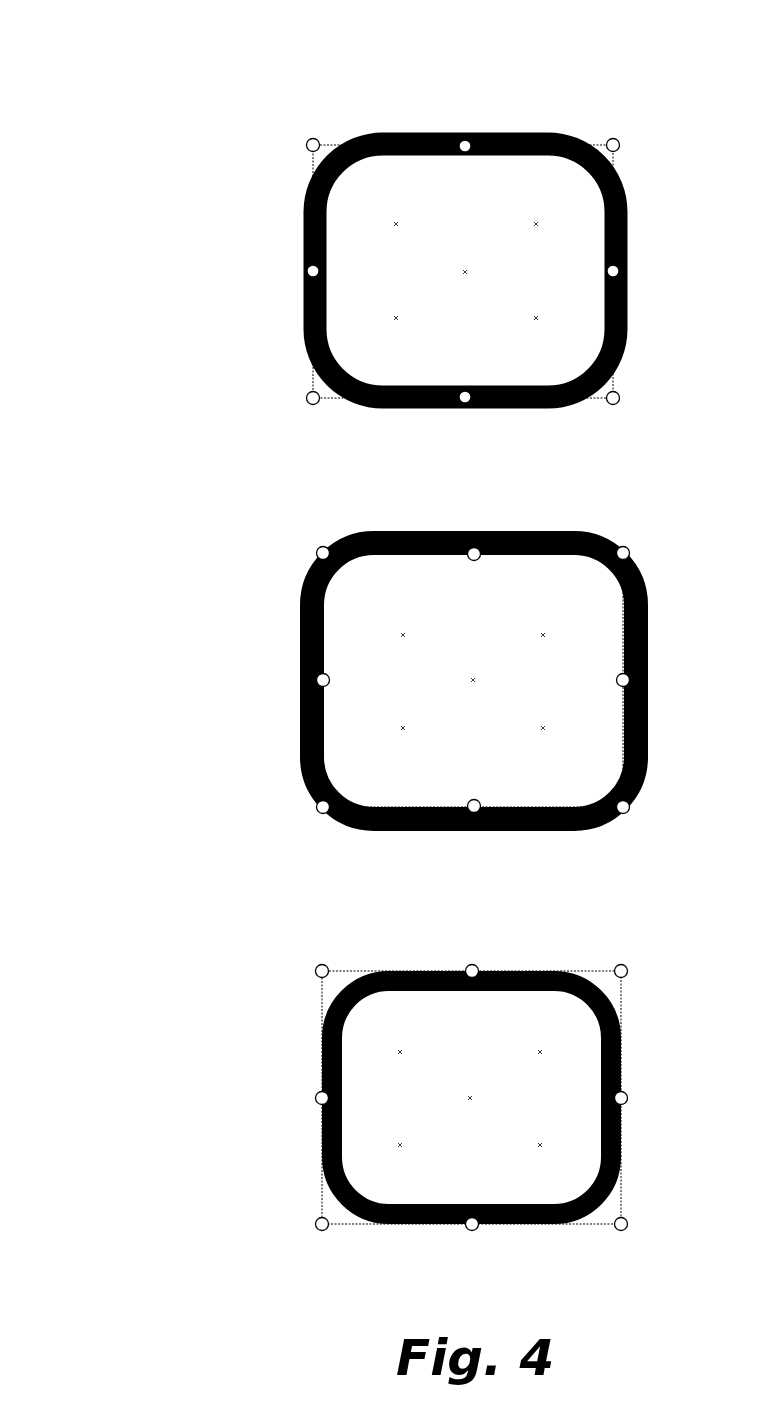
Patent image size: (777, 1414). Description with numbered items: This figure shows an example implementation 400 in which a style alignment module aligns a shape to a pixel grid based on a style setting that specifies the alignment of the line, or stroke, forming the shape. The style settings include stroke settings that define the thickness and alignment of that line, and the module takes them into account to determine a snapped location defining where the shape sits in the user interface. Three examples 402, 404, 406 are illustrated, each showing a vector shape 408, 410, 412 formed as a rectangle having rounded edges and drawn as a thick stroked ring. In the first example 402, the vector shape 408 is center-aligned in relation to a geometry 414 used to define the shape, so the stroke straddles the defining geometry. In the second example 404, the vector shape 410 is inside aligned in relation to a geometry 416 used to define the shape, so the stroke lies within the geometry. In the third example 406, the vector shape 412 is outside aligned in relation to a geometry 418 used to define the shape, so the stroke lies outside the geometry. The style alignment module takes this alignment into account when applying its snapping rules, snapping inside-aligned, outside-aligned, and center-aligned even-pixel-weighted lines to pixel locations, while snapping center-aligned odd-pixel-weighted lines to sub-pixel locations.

The example implementation 400 is at (172, 70).
The first example 402 is at (267, 95).
The second example 404 is at (284, 530).
The third example 406 is at (284, 955).
The vector shape 408 is at (429, 134).
The vector shape 410 is at (422, 533).
The vector shape 412 is at (423, 972).
The geometry 414 is at (618, 141).
The geometry 416 is at (627, 548).
The geometry 418 is at (626, 968).